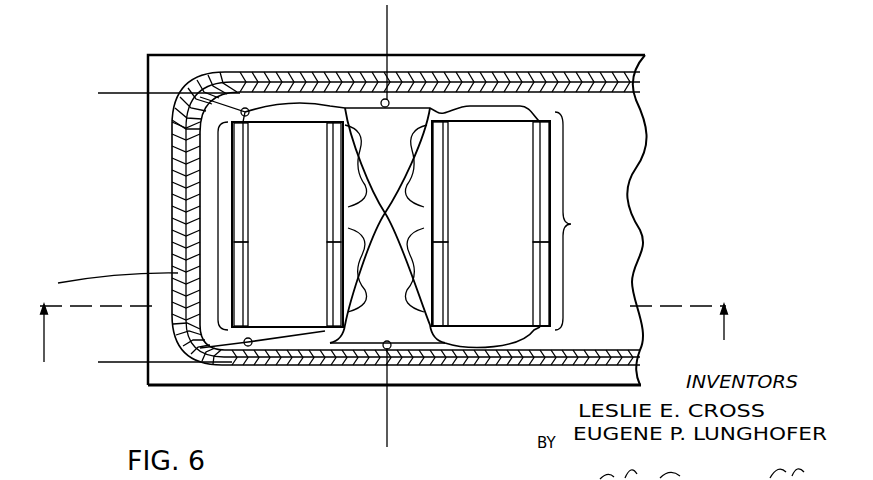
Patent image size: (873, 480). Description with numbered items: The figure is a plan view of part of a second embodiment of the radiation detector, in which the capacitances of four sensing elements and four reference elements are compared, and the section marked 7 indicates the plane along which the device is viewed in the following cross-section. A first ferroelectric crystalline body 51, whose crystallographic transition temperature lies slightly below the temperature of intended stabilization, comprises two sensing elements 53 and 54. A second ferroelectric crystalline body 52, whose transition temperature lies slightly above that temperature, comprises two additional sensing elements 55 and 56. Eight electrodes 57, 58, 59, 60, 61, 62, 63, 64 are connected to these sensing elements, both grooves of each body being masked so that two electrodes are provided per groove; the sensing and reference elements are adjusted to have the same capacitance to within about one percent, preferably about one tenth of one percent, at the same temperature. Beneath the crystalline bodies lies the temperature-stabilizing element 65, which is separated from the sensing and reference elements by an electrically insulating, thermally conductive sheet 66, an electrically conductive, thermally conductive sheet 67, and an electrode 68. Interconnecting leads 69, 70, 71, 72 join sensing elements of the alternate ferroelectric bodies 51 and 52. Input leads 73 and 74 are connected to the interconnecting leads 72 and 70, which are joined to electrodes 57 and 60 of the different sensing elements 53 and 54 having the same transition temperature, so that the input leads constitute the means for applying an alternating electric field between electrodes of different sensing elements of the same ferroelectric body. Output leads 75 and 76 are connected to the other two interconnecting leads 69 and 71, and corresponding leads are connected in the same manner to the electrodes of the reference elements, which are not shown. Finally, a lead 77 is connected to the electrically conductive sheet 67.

The section line 7- 7 is at (389, 347).
The first ferroelectric crystalline body 51 is at (227, 226).
The second ferroelectric crystalline body 52 is at (518, 221).
The sensing element 53 is at (362, 150).
The sensing element 54 is at (363, 278).
The sensing element 55 is at (418, 164).
The sensing element 56 is at (414, 298).
The electrode 57 is at (245, 123).
The electrode 58 is at (328, 123).
The electrode 59 is at (328, 326).
The electrode 60 is at (245, 326).
The electrode 61 is at (447, 123).
The electrode 62 is at (534, 123).
The electrode 63 is at (533, 326).
The electrode 64 is at (447, 326).
The temperature-stabilizing element 65 is at (168, 386).
The electrically insulating, thermally conductive sheet 66 is at (196, 134).
The electrically conductive, thermally conductive sheet 67 is at (184, 148).
The electrode 68 is at (172, 178).
The interconnecting lead 69 is at (392, 99).
The interconnecting lead 70 is at (470, 104).
The interconnecting lead 71 is at (362, 344).
The interconnecting lead 72 is at (468, 346).
The input lead 73 is at (124, 91).
The input lead 74 is at (128, 360).
The output lead 75 is at (385, 33).
The output lead 76 is at (386, 424).
The lead 77 is at (95, 278).